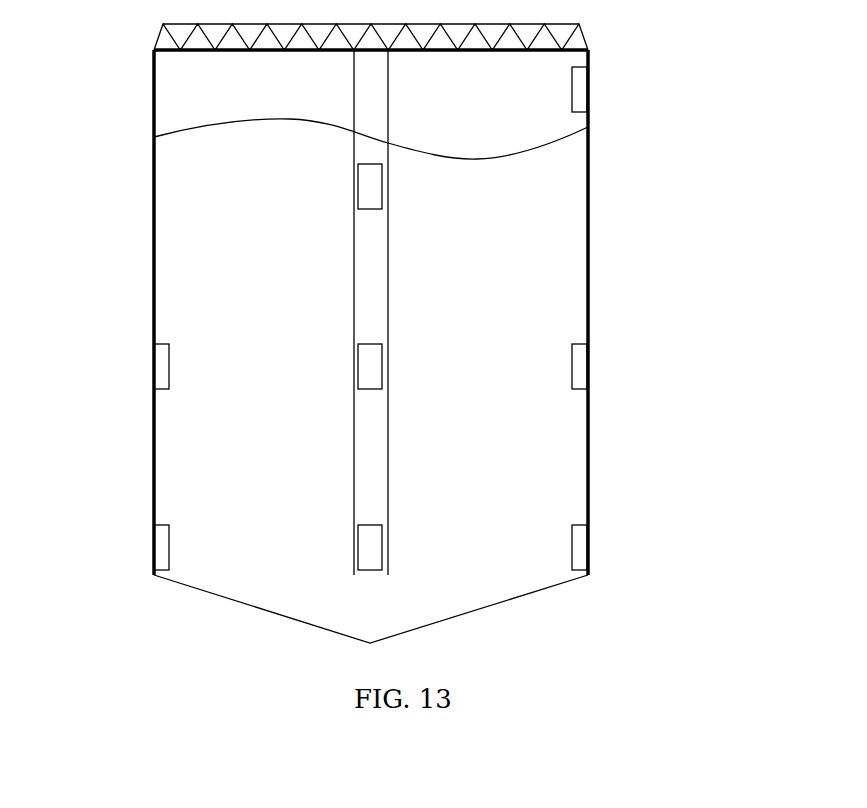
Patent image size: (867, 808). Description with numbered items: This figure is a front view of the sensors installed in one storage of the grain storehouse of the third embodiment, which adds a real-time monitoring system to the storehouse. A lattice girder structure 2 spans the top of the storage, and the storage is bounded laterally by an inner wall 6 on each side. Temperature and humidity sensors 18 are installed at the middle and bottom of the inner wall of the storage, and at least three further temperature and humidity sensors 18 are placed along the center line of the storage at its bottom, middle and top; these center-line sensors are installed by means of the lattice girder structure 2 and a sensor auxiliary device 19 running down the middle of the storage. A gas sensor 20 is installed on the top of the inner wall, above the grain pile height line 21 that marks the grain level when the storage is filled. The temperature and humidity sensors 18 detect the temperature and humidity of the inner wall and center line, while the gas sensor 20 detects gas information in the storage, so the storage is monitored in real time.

The lattice girder structure 2 is at (428, 130).
The side wall 6 is at (645, 312).
The temperature and humidity sensor 18 is at (540, 297).
The sensor auxiliary device 19 is at (538, 313).
The gas sensor 20 is at (584, 89).
The grain pile height line 21 is at (334, 213).